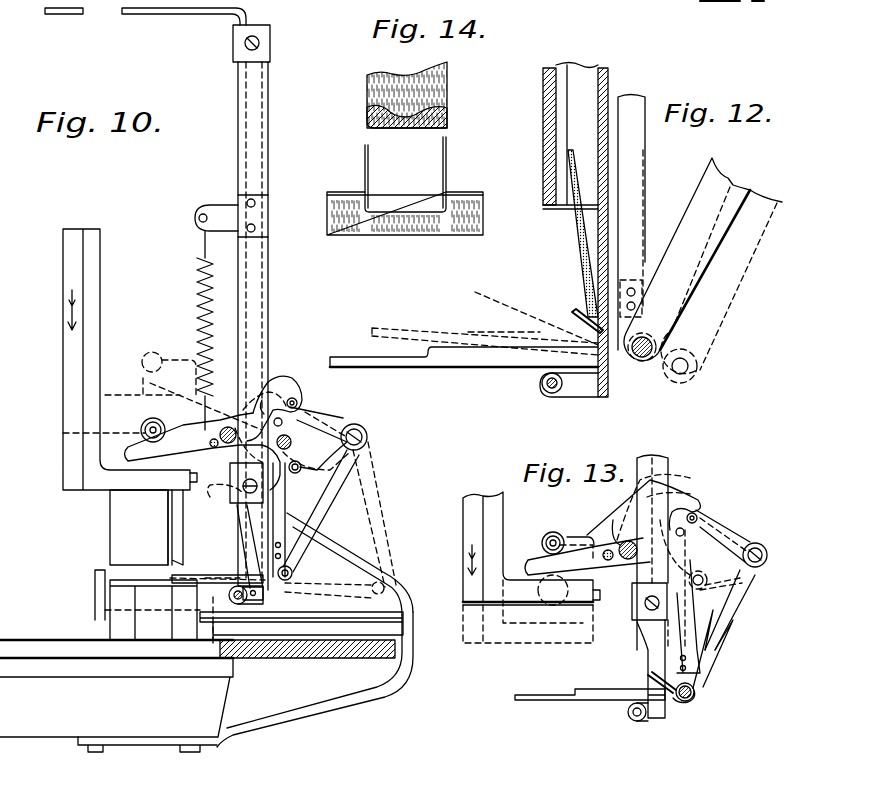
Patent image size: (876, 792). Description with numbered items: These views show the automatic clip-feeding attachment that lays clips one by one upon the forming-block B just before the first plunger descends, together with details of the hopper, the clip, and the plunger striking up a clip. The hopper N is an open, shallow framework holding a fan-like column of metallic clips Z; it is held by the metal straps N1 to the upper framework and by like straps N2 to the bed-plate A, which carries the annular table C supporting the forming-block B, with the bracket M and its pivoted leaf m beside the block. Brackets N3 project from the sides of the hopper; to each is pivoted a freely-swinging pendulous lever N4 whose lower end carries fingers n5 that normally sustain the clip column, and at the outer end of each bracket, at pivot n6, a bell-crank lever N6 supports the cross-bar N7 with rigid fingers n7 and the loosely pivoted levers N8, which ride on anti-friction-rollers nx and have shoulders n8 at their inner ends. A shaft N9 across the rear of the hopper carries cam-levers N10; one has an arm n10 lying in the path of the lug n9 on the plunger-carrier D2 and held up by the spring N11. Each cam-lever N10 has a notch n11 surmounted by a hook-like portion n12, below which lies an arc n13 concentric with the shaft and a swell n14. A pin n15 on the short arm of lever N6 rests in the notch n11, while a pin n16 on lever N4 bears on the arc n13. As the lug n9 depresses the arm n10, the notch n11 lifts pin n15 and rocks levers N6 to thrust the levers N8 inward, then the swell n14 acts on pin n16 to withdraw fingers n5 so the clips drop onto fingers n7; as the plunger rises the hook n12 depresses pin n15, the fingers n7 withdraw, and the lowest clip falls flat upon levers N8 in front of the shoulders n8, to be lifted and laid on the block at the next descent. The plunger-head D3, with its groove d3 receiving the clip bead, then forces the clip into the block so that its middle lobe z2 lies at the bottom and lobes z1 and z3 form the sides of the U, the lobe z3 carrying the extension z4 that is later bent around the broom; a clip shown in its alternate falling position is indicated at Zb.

In FIG. 10, the metal straps N1 is at (176, 12).
In FIG. 10, the hopper N is at (238, 143).
In FIG. 12, the hopper N is at (545, 92).
In FIG. 13, the hopper N is at (650, 586).
In FIG. 10, the spring N11 is at (197, 300).
In FIG. 10, the plunger-carrier D2 is at (70, 395).
In FIG. 13, the plunger-carrier D2 is at (468, 512).
In FIG. 10, the projection or lug n9 is at (146, 420).
In FIG. 13, the projection or lug n9 is at (550, 532).
In FIG. 10, the arm n10 is at (203, 451).
In FIG. 13, the arm n10 is at (540, 566).
In FIG. 10, the shaft N9 is at (226, 428).
In FIG. 13, the shaft N9 is at (618, 540).
In FIG. 10, the cam-lever N10 is at (272, 385).
In FIG. 13, the cam-lever N10 is at (676, 492).
In FIG. 10, the notch n11 is at (285, 392).
In FIG. 13, the notch n11 is at (690, 500).
In FIG. 10, the hook-like portion n12 is at (298, 398).
In FIG. 13, the hook-like portion n12 is at (702, 508).
In FIG. 10, the pin n15 is at (300, 408).
In FIG. 13, the pin n15 is at (700, 522).
In FIG. 10, the arc n13 is at (300, 422).
In FIG. 13, the arc n13 is at (745, 568).
In FIG. 10, the brackets N3 is at (340, 438).
In FIG. 13, the brackets N3 is at (718, 535).
In FIG. 10, the pivot n6 is at (367, 437).
In FIG. 13, the pivot n6 is at (764, 545).
In FIG. 10, the pendulous lever N4 is at (296, 472).
In FIG. 12, the pendulous lever N4 is at (642, 164).
In FIG. 13, the pendulous lever N4 is at (683, 645).
In FIG. 10, the bell-crank lever N6 is at (326, 520).
In FIG. 12, the bell-crank lever N6 is at (697, 280).
In FIG. 13, the bell-crank lever N6 is at (747, 610).
In FIG. 10, the pin n16 is at (352, 472).
In FIG. 13, the pin n16 is at (712, 584).
In FIG. 10, the swell n14 is at (318, 548).
In FIG. 13, the swell n14 is at (688, 590).
In FIG. 10, the fingers n5 is at (284, 582).
In FIG. 12, the fingers n5 is at (618, 310).
In FIG. 13, the fingers n5 is at (655, 665).
In FIG. 10, the anti-friction-roller nx is at (229, 597).
In FIG. 12, the anti-friction-roller nx is at (546, 393).
In FIG. 13, the anti-friction-roller nx is at (636, 723).
In FIG. 10, the shoulders n8 is at (172, 578).
In FIG. 12, the shoulders n8 is at (418, 366).
In FIG. 10, the levers N8 is at (200, 575).
In FIG. 12, the levers N8 is at (470, 367).
In FIG. 13, the levers N8 is at (588, 700).
In FIG. 10, the plunger-head D3 is at (139, 527).
In FIG. 14, the plunger-head D3 is at (372, 97).
In FIG. 10, the groove d3 is at (182, 548).
In FIG. 14, the groove d3 is at (450, 112).
In FIG. 10, the forming-block B is at (125, 597).
In FIG. 14, the forming-block B is at (484, 218).
In FIG. 10, the annular table C is at (36, 645).
In FIG. 10, the bed-plate A is at (116, 705).
In FIG. 10, the leaf m is at (290, 625).
In FIG. 10, the bracket M is at (318, 658).
In FIG. 10, the straps N2 is at (345, 700).
In FIG. 14, the metallic clip Z is at (421, 174).
In FIG. 12, the metallic clip Z is at (575, 236).
In FIG. 12, the channel strip (alternate position) Zb is at (508, 305).
In FIG. 14, the lobe z1 is at (364, 160).
In FIG. 14, the middle lobe z2 is at (390, 192).
In FIG. 14, the lobe z3 is at (448, 182).
In FIG. 14, the extension z4 is at (445, 150).
In FIG. 12, the fingers n7 is at (572, 312).
In FIG. 13, the fingers n7 is at (648, 678).
In FIG. 12, the cross-bar N7 is at (650, 330).
In FIG. 13, the cross-bar N7 is at (696, 692).